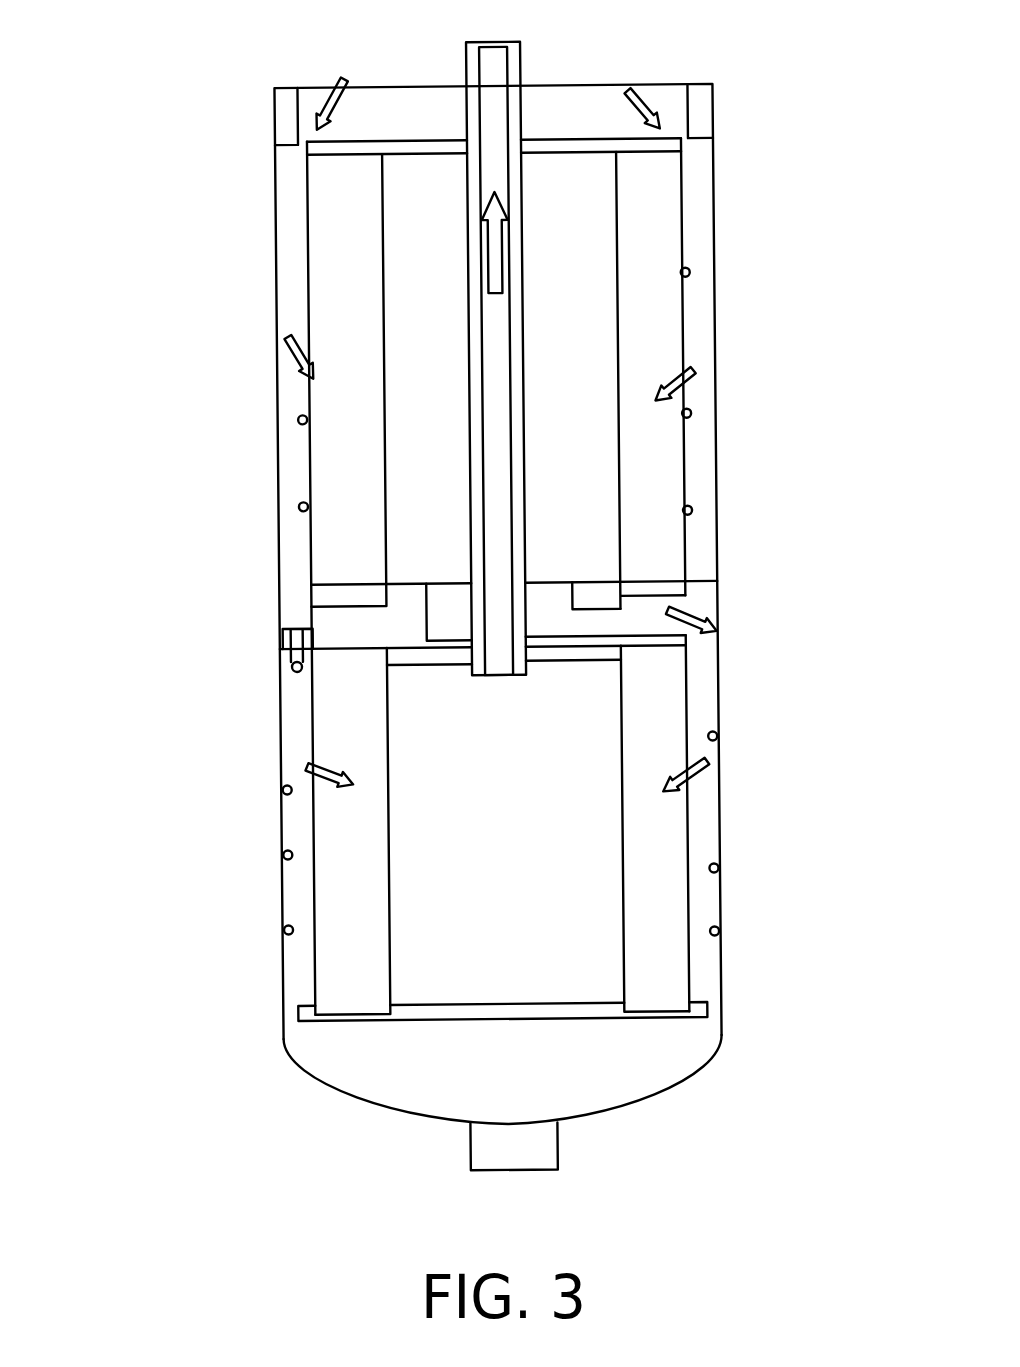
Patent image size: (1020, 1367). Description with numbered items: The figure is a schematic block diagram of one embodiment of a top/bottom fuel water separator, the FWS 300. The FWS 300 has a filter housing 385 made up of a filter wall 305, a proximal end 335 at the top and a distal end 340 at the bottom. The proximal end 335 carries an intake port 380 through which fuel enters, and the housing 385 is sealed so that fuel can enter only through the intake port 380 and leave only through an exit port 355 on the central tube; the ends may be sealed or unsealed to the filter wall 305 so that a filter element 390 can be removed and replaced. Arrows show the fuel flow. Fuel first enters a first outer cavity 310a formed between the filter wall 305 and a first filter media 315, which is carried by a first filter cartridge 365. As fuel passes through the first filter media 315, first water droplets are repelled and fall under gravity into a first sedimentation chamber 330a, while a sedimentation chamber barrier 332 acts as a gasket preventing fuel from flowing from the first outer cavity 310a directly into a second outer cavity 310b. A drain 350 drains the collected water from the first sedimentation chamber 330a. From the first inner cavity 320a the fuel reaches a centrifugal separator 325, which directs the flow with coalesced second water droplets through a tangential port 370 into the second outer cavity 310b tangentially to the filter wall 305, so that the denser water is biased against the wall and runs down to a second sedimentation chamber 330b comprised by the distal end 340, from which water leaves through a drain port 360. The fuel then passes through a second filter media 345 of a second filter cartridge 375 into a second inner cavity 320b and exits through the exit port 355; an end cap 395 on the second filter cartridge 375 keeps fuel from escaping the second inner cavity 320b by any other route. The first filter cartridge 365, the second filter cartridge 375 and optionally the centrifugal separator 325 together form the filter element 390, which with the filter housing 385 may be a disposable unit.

The top/bottom FWS 300 is at (123, 68).
The filter wall 305 is at (279, 176).
The first outer cavity 310a is at (291, 406).
The second outer cavity 310b is at (297, 956).
The first filter media 315 is at (333, 471).
The first inner cavity 320a is at (573, 534).
The second inner cavity 320b is at (597, 914).
The centrifugal separator 325 is at (424, 585).
The first sedimentation chamber 330a is at (297, 606).
The second sedimentation chamber 330b is at (475, 1133).
The sedimentation chamber barrier 332 is at (279, 640).
The proximal end 335 is at (279, 88).
The distal end 340 is at (302, 1073).
The second filter media 345 is at (340, 911).
The drain 350 is at (278, 622).
The exit port 355 is at (523, 206).
The drain port 360 is at (547, 1170).
The first filter cartridge 365 is at (311, 288).
The tangential port 370 is at (625, 624).
The second filter cartridge 375 is at (688, 814).
The intake port 380 is at (327, 83).
The filter housing 385 is at (281, 758).
The filter element 390 is at (682, 227).
The end cap 395 is at (604, 1021).